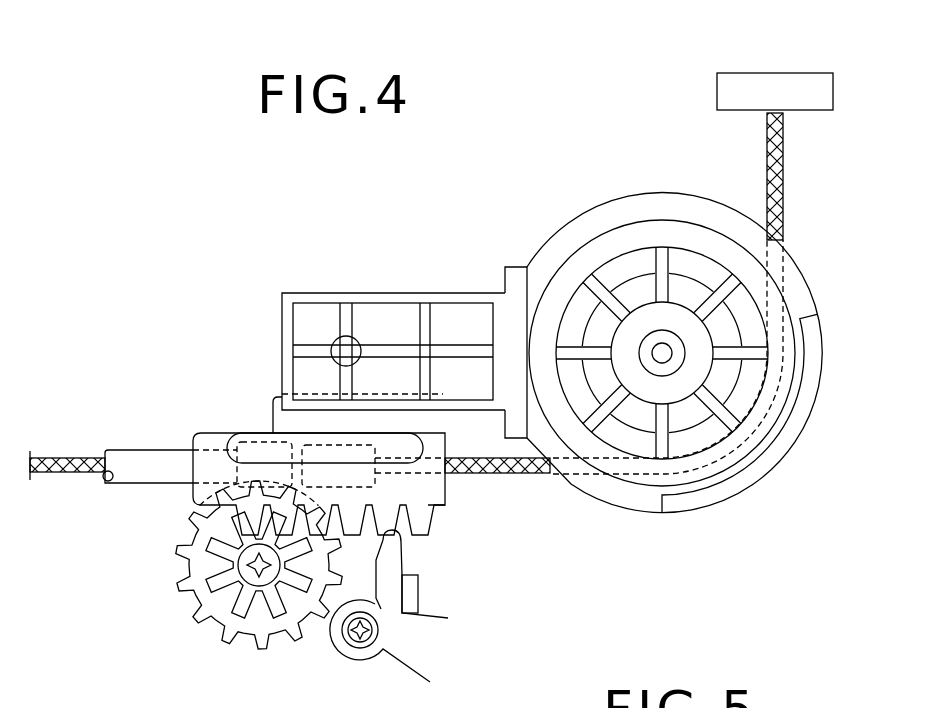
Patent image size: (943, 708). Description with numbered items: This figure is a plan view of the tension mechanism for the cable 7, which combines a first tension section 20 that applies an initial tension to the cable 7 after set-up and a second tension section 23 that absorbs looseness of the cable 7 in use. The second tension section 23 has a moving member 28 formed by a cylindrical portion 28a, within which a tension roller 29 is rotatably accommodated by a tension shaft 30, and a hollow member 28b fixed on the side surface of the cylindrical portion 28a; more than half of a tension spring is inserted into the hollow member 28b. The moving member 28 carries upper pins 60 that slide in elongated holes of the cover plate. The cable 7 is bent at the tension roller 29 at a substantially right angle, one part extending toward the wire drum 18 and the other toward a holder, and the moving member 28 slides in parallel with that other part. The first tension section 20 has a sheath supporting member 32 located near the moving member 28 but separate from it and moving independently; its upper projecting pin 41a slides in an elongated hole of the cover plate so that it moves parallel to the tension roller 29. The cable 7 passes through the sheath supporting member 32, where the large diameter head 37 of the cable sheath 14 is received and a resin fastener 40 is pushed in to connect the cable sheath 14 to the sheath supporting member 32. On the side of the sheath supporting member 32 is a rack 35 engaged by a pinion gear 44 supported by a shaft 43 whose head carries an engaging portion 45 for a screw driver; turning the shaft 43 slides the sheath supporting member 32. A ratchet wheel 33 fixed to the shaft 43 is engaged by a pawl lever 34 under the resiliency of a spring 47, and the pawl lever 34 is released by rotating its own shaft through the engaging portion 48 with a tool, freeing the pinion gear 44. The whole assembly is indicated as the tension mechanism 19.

The cable 7 is at (64, 456).
The cable sheath 14 is at (164, 456).
The wire drum 18 is at (788, 72).
The drive mechanism 19 is at (262, 258).
The first tension section 20 is at (170, 549).
The second tension section 23 is at (598, 212).
The moving member 28 is at (527, 262).
The cylindrical portion 28a is at (655, 207).
The hollow member 28b is at (388, 300).
The tension roller 29 is at (748, 318).
The tension shaft 30 is at (658, 362).
The sheath supporting member 32 is at (212, 442).
The ratchet wheel 33 is at (190, 588).
The pawl lever 34 is at (380, 567).
The rack 35 is at (432, 511).
The large diameter head 37 is at (323, 443).
The resin fastener 40 is at (257, 443).
The upper projecting pin 41a is at (390, 447).
The shaft 43 is at (243, 583).
The pinion gear 44 is at (290, 622).
The engaging portion 45 is at (242, 544).
The spring 47 is at (393, 666).
The engaging portion 48 is at (368, 637).
The upper pins 60 is at (346, 338).